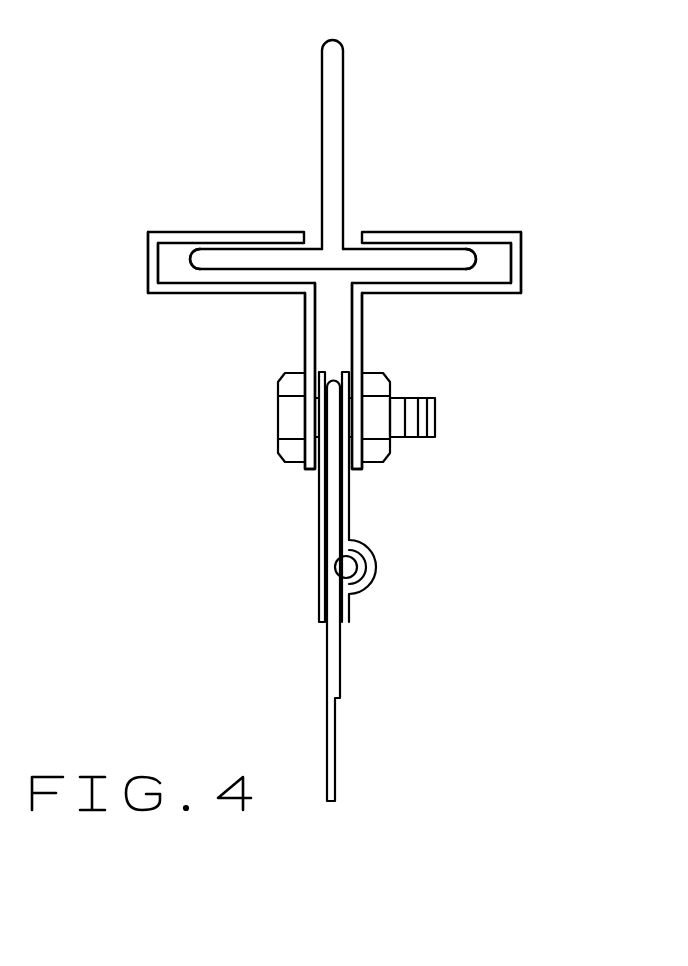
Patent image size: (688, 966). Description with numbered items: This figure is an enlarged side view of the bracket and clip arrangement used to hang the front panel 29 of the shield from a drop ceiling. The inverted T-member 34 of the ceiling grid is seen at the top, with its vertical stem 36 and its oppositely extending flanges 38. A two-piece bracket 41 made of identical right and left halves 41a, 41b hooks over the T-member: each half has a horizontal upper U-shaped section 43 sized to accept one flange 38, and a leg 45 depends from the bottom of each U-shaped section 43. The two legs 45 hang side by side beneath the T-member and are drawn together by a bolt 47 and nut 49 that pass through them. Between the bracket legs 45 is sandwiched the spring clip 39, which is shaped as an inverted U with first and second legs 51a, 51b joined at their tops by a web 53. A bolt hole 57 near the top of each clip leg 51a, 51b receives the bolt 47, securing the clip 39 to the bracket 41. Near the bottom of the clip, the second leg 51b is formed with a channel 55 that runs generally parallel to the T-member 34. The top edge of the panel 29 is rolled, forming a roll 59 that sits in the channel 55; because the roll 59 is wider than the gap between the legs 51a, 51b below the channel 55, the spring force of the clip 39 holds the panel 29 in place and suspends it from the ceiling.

The front panel 29 is at (333, 751).
The T-member 34 is at (333, 154).
The stem 36 is at (345, 168).
The flange 38 is at (234, 270).
The spring clip 39 is at (351, 524).
The bracket 41 is at (333, 303).
The right bracket half 41a is at (460, 221).
The left bracket half 41b is at (217, 221).
The U-shaped section 43 is at (147, 247).
The leg 45 is at (305, 318).
The bolt 47 is at (278, 450).
The nut 49 is at (377, 463).
The first leg 51a is at (318, 528).
The second leg 51b is at (417, 499).
The web 53 is at (333, 379).
The channel 55 is at (362, 593).
The bolt hole 57 is at (349, 415).
The roll 59 is at (358, 567).